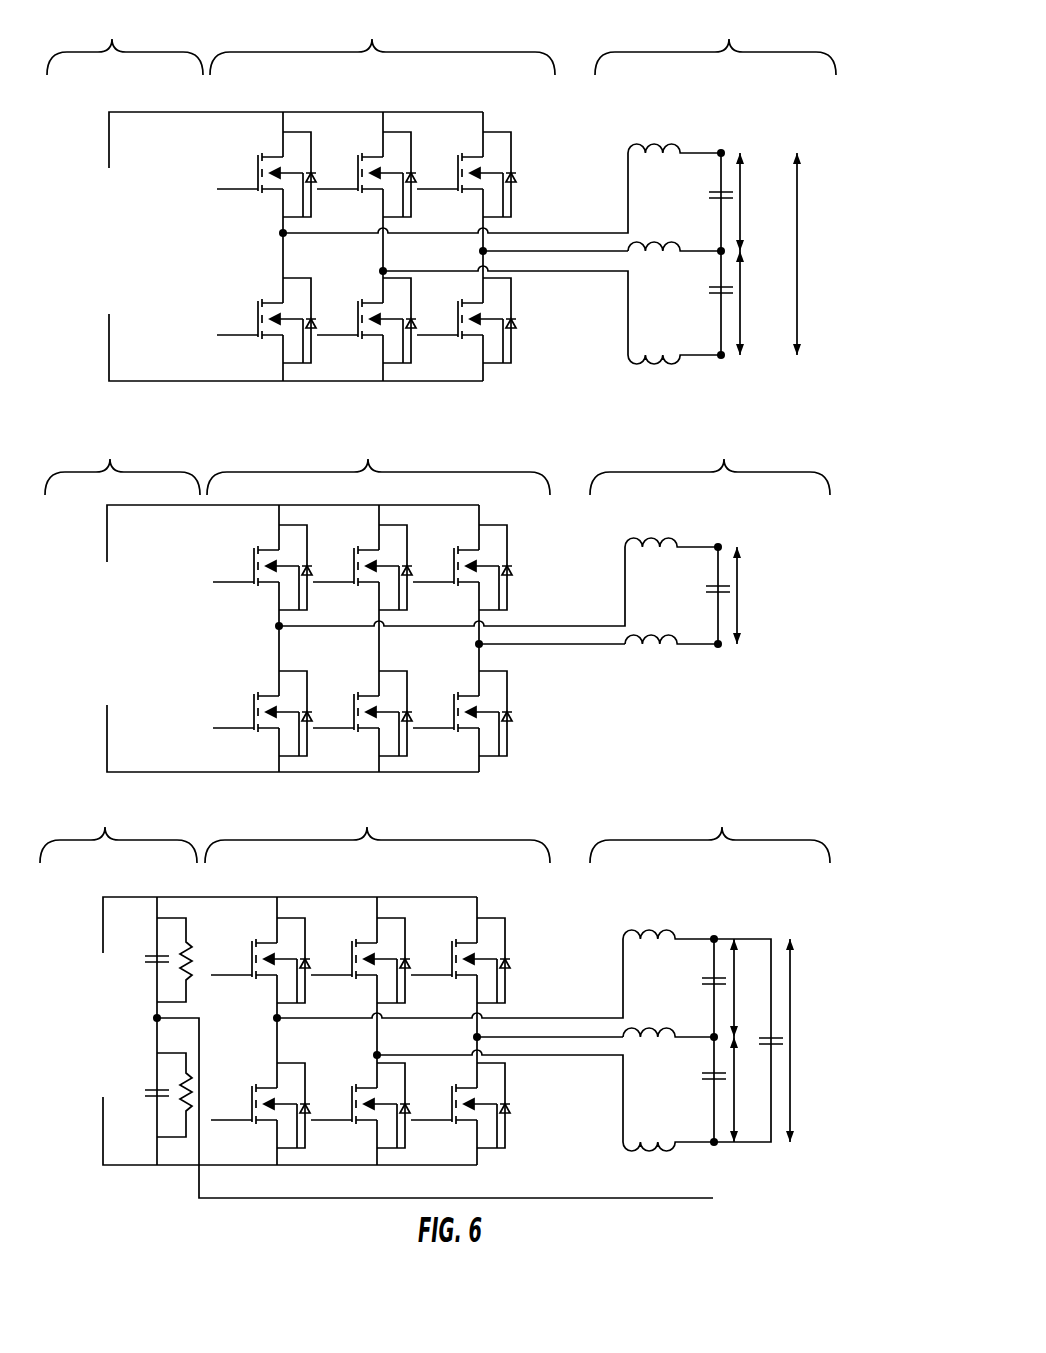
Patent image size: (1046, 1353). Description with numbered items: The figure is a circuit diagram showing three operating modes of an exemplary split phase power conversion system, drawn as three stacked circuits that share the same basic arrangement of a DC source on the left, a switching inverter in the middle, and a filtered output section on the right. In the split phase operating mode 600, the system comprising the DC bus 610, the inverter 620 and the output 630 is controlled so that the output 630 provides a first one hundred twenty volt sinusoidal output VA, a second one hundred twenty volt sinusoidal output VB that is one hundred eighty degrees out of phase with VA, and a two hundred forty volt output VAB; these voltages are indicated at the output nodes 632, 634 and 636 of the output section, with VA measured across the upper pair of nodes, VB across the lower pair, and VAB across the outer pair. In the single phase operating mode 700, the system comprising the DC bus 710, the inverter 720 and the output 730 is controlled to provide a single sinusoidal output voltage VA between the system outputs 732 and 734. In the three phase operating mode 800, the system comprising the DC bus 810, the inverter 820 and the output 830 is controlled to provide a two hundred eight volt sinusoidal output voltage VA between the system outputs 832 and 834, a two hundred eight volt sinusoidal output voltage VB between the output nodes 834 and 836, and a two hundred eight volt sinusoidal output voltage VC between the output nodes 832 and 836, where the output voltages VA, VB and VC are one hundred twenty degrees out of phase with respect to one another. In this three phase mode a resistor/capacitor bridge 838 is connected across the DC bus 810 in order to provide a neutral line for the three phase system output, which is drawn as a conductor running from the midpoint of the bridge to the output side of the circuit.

The operating mode 600 is at (842, 55).
The DC bus 610 is at (265, 196).
The inverter 620 is at (419, 196).
The output 630 is at (717, 188).
The output node A 632 is at (722, 149).
The neutral output node 634 is at (718, 256).
The output node B 636 is at (724, 357).
The operating mode 700 is at (838, 474).
The DC bus 710 is at (262, 601).
The inverter 720 is at (416, 601).
The output 730 is at (710, 537).
The system output 732 is at (719, 543).
The system output 734 is at (715, 648).
The operating mode 800 is at (836, 839).
The DC bus 810 is at (258, 982).
The inverter 820 is at (414, 982).
The output 830 is at (710, 975).
The system output 832 is at (715, 935).
The system output 834 is at (711, 1041).
The output node 836 is at (717, 1144).
The resistor/capacitor bridge 838 is at (192, 1020).